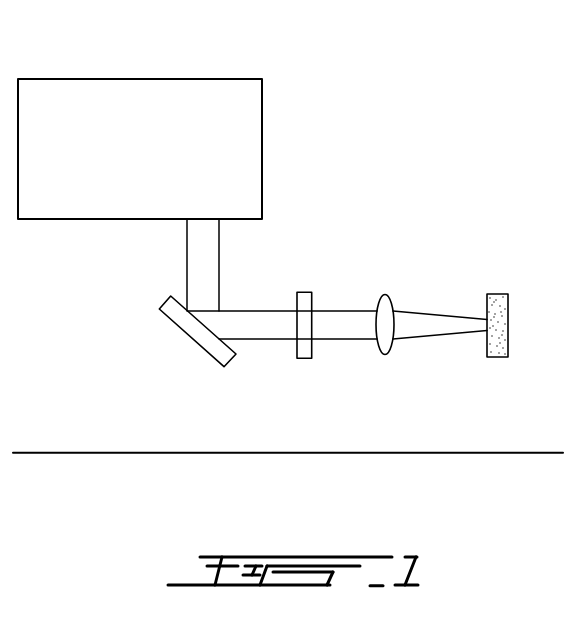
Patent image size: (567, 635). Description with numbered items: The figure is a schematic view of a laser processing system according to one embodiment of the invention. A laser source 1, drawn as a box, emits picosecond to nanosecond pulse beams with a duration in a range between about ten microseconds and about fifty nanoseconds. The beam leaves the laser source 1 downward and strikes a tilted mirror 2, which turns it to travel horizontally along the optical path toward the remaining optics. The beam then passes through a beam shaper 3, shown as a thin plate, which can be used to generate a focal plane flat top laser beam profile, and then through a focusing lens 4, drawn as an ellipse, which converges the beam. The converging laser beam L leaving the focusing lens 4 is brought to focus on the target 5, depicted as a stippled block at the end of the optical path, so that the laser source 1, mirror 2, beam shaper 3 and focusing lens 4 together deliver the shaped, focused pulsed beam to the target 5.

The laser source 1 is at (142, 97).
The mirror 2 is at (203, 335).
The beam shaper 3 is at (304, 347).
The focusing lens 4 is at (387, 337).
The target 5 is at (499, 345).
The laser beam L is at (437, 343).